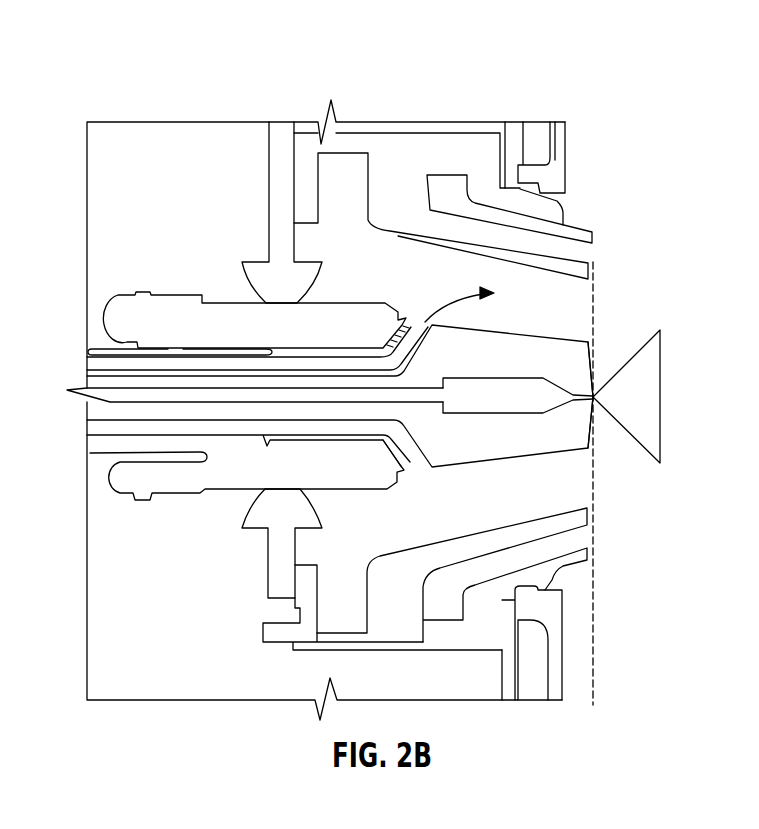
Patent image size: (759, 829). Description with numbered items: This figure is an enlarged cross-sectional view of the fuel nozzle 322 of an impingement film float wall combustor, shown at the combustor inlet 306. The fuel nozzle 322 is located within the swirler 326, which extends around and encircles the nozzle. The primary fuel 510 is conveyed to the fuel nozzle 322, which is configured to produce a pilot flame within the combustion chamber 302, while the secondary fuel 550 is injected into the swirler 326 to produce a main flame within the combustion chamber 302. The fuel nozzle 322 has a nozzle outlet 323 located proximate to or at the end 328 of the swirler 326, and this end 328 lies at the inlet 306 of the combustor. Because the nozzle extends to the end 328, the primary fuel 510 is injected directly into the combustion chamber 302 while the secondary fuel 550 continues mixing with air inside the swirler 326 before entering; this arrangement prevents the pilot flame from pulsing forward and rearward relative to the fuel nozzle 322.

The swirler 326 is at (472, 150).
The end of swirler 328 is at (593, 237).
The inlet 306 is at (595, 297).
The secondary fuel 550 is at (433, 310).
The primary fuel 510 is at (662, 350).
The combustion chamber 302 is at (717, 400).
The nozzle outlet 323 is at (594, 398).
The fuel nozzle 322 is at (470, 452).